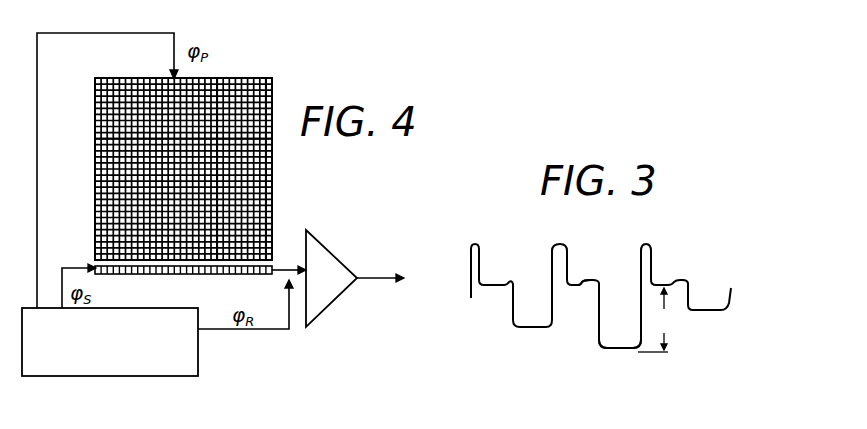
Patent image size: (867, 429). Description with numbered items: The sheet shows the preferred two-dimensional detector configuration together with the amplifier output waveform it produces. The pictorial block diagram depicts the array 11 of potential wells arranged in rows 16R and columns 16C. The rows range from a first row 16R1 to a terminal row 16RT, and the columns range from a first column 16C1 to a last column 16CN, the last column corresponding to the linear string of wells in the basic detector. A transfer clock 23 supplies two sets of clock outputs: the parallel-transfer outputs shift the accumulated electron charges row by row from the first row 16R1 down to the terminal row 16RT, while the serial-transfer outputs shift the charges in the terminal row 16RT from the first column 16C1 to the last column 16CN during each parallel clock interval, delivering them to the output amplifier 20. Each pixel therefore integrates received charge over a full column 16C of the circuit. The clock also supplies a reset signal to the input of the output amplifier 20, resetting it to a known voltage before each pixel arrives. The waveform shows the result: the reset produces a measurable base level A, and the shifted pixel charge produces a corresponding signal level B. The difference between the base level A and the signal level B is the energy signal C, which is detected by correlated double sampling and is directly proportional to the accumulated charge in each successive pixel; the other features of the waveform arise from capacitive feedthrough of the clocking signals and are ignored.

In FIG. 4, the charge-coupled device imaging array 11 is at (310, 177).
In FIG. 4, the first column 16C1 is at (95, 78).
In FIG. 4, the columns 16C is at (222, 78).
In FIG. 4, the last column 16CN is at (243, 78).
In FIG. 4, the first row 16R1 is at (95, 78).
In FIG. 4, the rows 16R is at (91, 125).
In FIG. 4, the terminal row 16RT is at (95, 262).
In FIG. 4, the output amplifier 20 is at (330, 250).
In FIG. 4, the clock 23 is at (198, 356).
In FIG. 3, the base level A is at (586, 282).
In FIG. 3, the signal level B is at (620, 352).
In FIG. 3, the energy signal C is at (655, 320).